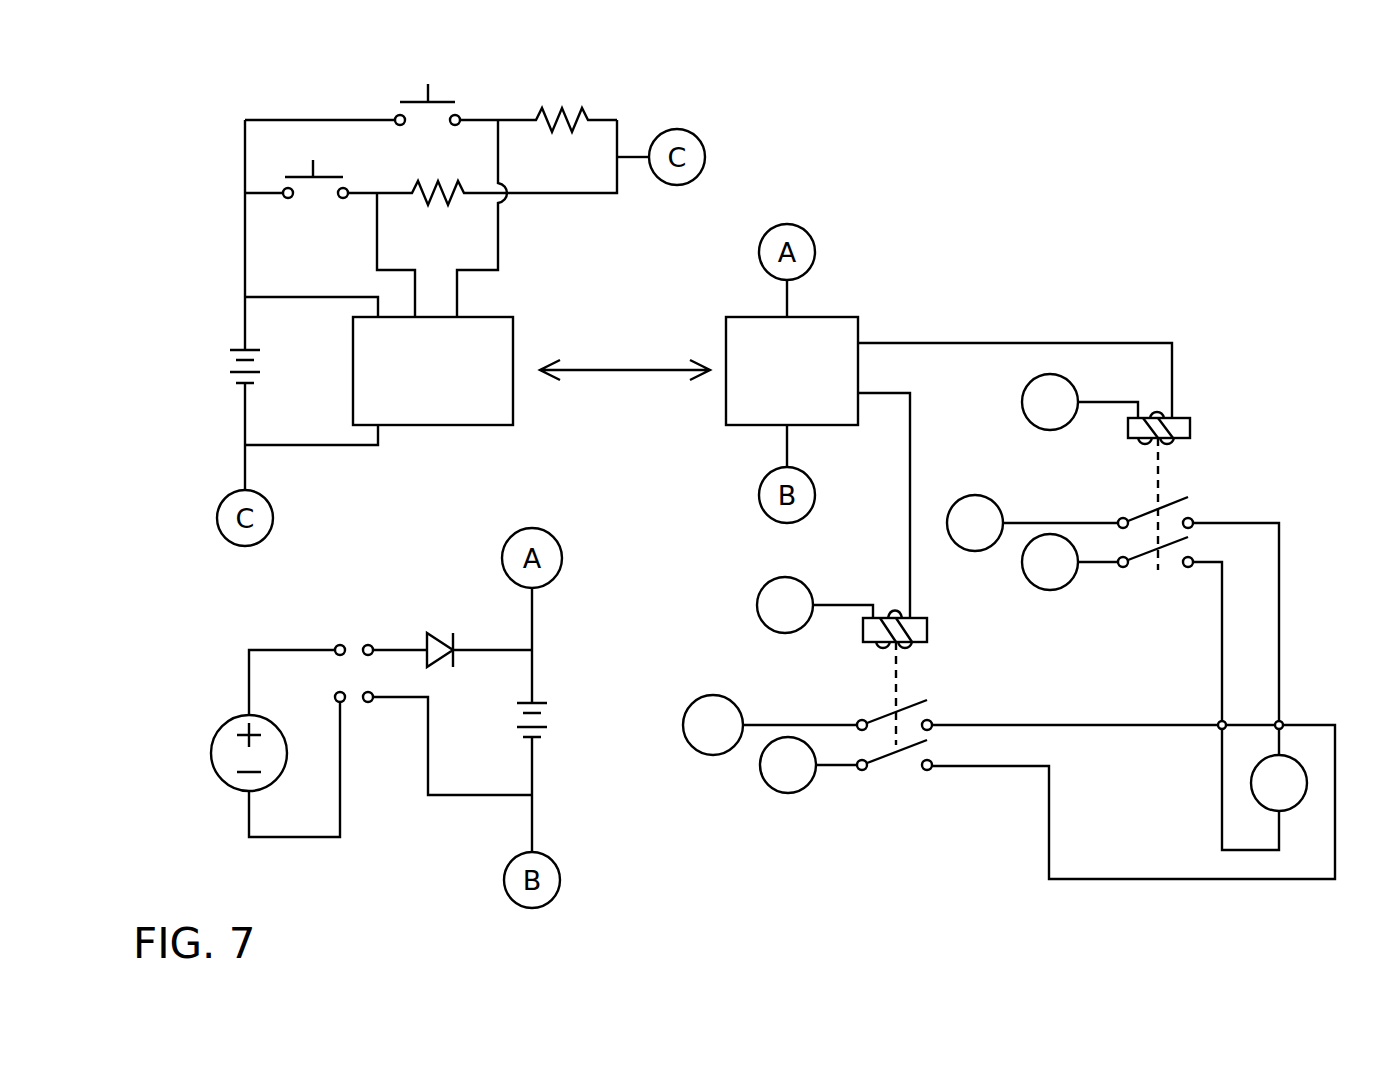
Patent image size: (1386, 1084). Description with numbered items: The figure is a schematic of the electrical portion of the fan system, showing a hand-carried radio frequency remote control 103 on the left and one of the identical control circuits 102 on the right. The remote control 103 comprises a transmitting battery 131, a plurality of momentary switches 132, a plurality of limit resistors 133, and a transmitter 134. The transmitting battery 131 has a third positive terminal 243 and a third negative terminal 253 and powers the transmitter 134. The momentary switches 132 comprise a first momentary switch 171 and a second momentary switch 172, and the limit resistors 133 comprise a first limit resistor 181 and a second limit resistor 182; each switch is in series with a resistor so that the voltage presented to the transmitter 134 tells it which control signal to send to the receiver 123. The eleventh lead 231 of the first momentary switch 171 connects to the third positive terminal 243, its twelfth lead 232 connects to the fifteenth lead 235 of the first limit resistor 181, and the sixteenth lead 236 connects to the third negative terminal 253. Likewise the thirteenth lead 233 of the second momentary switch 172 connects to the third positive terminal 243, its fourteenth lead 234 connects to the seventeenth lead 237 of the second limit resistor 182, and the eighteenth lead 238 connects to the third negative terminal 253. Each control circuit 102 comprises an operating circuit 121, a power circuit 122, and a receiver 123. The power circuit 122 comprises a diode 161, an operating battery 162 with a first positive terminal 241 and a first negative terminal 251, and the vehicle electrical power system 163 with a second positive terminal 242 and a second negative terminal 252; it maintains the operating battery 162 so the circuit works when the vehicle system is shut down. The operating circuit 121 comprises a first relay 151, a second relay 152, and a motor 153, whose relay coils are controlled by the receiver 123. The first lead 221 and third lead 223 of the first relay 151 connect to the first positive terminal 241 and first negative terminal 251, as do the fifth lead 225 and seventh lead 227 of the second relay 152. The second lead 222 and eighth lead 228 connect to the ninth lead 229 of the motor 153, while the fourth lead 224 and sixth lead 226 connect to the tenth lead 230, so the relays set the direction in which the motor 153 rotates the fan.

The control circuit 102 is at (1230, 182).
The remote control 103 is at (212, 166).
The operating circuit 121 is at (1165, 318).
The power circuit 122 is at (580, 855).
The receiver 123 is at (845, 317).
The transmitting battery 131 is at (222, 368).
The plurality of momentary switches 132 is at (415, 92).
The plurality of limit resistors 133 is at (560, 90).
The transmitter 134 is at (513, 317).
The first relay 151 is at (1180, 480).
The second relay 152 is at (922, 667).
The motor 153 is at (1305, 765).
The diode 161 is at (441, 630).
The operating battery 162 is at (555, 720).
The vehicle electrical power system 163 is at (211, 757).
The first momentary switch 171 is at (440, 92).
The second momentary switch 172 is at (305, 200).
The first limit resistor 181 is at (560, 115).
The second limit resistor 182 is at (437, 185).
The first lead 221 is at (1120, 516).
The second lead 222 is at (1195, 516).
The third lead 223 is at (1122, 569).
The fourth lead 224 is at (1188, 569).
The fifth lead 225 is at (857, 718).
The sixth lead 226 is at (933, 718).
The seventh lead 227 is at (860, 772).
The eighth lead 228 is at (928, 772).
The ninth lead 229 is at (1282, 708).
The tenth lead 230 is at (1282, 830).
The eleventh lead 231 is at (396, 115).
The twelfth lead 232 is at (458, 115).
The thirteenth lead 233 is at (285, 189).
The fourteenth lead 234 is at (348, 189).
The fifteenth lead 235 is at (514, 122).
The sixteenth lead 236 is at (625, 119).
The seventeenth lead 237 is at (395, 195).
The eighteenth lead 238 is at (480, 195).
The first positive terminal 241 is at (535, 690).
The second positive terminal 242 is at (247, 702).
The third positive terminal 243 is at (243, 342).
The first negative terminal 251 is at (535, 766).
The second negative terminal 252 is at (245, 812).
The third negative terminal 253 is at (243, 395).